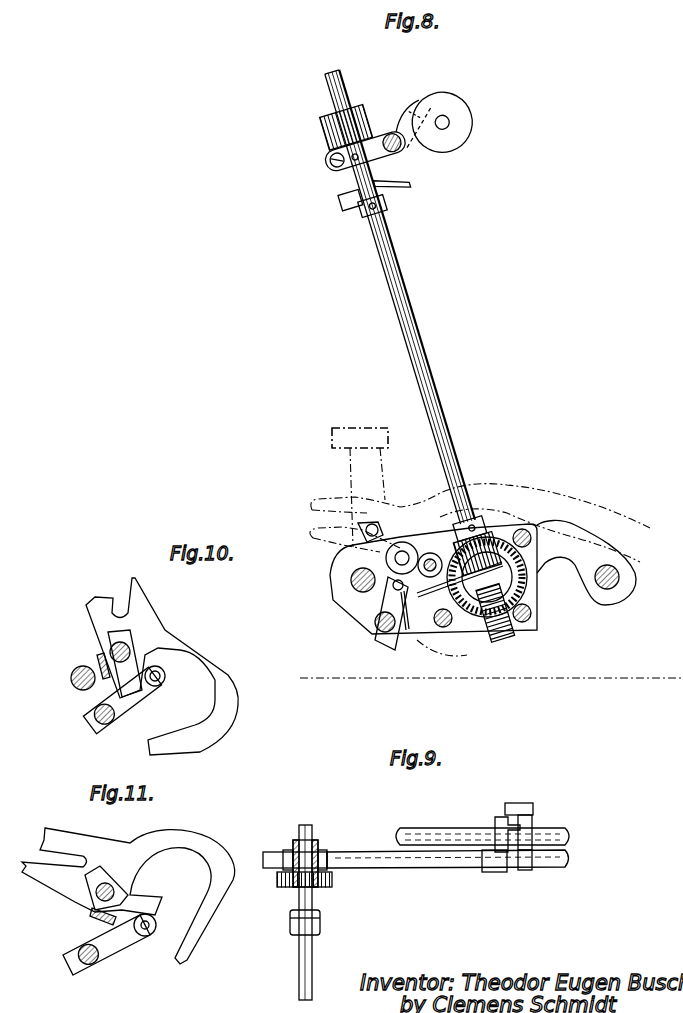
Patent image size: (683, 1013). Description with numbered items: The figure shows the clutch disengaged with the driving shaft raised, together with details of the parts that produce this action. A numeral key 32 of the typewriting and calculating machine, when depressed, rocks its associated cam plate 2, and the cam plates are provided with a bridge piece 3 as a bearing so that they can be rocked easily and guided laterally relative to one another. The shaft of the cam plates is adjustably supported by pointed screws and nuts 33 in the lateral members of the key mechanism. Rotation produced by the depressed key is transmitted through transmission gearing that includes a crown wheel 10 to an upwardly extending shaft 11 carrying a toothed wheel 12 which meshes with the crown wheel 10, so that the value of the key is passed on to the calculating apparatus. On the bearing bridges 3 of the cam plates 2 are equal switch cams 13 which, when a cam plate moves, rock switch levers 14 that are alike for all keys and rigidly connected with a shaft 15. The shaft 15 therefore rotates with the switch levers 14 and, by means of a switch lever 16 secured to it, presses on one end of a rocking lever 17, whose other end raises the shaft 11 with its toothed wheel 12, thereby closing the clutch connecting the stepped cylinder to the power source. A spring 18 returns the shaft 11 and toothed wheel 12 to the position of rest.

In FIG. 10, the cam plate 2 is at (188, 652).
In FIG. 11, the cam plate 2 is at (200, 843).
In FIG. 10, the bridge piece 3 is at (98, 660).
In FIG. 11, the bridge piece 3 is at (93, 918).
In FIG. 8, the crown wheel 10 is at (481, 612).
In FIG. 8, the shaft 11 is at (440, 392).
In FIG. 9, the shaft 11 is at (315, 970).
In FIG. 8, the toothed wheel 12 is at (498, 530).
In FIG. 10, the switch cam 13 is at (120, 640).
In FIG. 11, the switch cam 13 is at (92, 905).
In FIG. 10, the switch lever 14 is at (92, 730).
In FIG. 11, the switch lever 14 is at (73, 970).
In FIG. 8, the shaft 15 is at (380, 626).
In FIG. 10, the shaft 15 is at (94, 714).
In FIG. 11, the shaft 15 is at (78, 958).
In FIG. 8, the switch lever 16 is at (388, 598).
In FIG. 8, the rocking lever 17 is at (441, 555).
In FIG. 8, the spring 18 is at (533, 628).
In FIG. 8, the numeral key 32 is at (345, 433).
In FIG. 8, the nut 33 is at (417, 532).